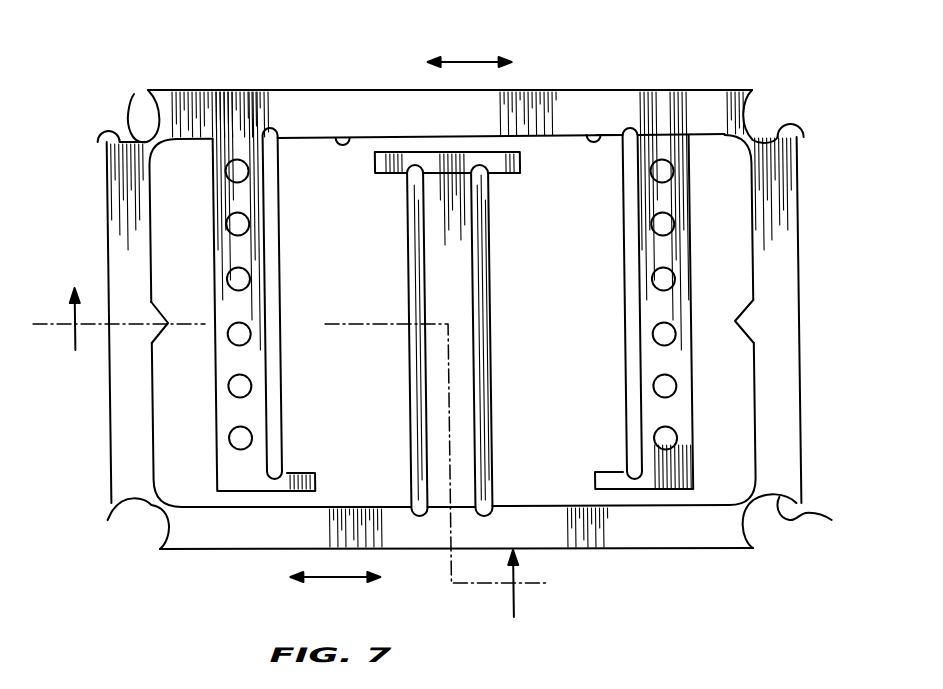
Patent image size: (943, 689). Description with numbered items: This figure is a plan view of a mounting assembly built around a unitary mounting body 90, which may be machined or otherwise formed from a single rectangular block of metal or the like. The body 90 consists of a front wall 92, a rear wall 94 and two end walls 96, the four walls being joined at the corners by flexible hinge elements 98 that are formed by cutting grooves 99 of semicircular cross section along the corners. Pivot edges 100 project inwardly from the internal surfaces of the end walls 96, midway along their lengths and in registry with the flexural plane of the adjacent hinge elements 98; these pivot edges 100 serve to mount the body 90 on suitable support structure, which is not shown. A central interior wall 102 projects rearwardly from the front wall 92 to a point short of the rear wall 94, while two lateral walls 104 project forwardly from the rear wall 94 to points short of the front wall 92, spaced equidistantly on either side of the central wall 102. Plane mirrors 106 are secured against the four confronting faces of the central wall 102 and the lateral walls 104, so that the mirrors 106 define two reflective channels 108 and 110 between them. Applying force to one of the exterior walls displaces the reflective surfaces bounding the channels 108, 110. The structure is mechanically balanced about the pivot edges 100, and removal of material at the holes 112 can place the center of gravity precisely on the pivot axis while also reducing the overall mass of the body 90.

The mounting body 90 is at (575, 86).
The front wall 92 is at (239, 535).
The rear wall 94 is at (318, 104).
The end walls 96 is at (126, 403).
The flexible hinge elements 98 is at (134, 94).
The grooves 99 is at (97, 137).
The pivot edges 100 is at (160, 317).
The central interior wall 102 is at (450, 300).
The lateral walls 104 is at (256, 254).
The plane mirrors 106 is at (407, 413).
The reflective channel 108 is at (345, 138).
The reflective channel 110 is at (606, 100).
The holes 112 is at (240, 280).